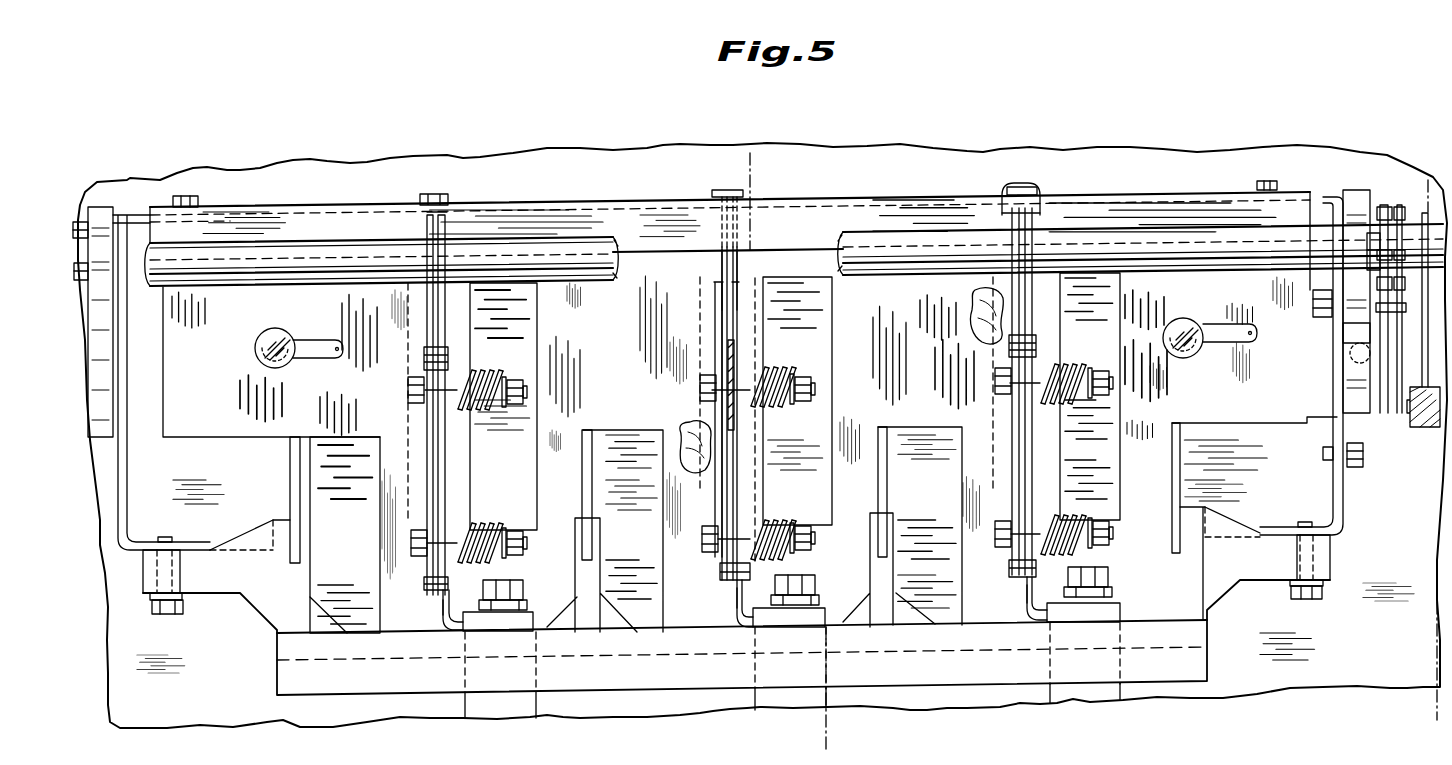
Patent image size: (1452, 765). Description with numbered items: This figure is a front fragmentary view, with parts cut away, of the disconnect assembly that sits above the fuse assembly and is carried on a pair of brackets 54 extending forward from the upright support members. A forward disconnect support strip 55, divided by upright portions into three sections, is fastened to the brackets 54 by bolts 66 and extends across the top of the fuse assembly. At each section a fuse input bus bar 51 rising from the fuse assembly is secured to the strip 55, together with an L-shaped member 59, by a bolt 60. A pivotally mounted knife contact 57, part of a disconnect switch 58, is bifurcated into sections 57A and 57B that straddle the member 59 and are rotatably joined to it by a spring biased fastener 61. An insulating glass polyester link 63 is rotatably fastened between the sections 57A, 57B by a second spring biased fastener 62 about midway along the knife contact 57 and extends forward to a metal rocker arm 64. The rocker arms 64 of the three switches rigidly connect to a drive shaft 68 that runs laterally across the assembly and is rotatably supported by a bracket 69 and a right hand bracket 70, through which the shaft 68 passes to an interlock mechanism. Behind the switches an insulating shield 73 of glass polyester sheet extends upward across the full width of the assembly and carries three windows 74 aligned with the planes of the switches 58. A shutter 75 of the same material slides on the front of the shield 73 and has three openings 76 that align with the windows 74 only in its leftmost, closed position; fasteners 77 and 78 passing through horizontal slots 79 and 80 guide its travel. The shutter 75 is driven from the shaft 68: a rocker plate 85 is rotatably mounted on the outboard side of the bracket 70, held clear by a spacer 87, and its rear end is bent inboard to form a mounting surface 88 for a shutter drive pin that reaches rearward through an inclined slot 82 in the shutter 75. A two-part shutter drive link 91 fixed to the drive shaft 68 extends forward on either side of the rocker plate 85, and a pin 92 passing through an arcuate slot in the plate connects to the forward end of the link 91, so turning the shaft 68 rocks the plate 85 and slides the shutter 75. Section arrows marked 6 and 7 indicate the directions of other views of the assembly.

The fuse input bus bar 51 is at (537, 617).
The bracket 54 is at (137, 517).
The forward disconnect support strip 55 is at (270, 605).
The knife contact 57 is at (440, 465).
The knife contact section 57A is at (719, 262).
The knife contact section 57B is at (741, 264).
The disconnect switch 58 is at (447, 341).
The L-shaped member 59 is at (443, 611).
The bolt 60 is at (521, 581).
The spring biased fastener 61 is at (490, 520).
The second spring biased fastener 62 is at (500, 368).
The link 63 is at (424, 357).
The rocker arm 64 is at (449, 220).
The bolt 66 is at (168, 616).
The drive shaft 68 is at (522, 237).
The bracket 69 is at (100, 207).
The right hand bracket 70 is at (1350, 190).
The insulating shield 73 is at (333, 571).
The window 74 is at (689, 431).
The shutter 75 is at (591, 313).
The opening 76 is at (535, 305).
The fastener 77 is at (275, 328).
The fastener 78 is at (1184, 318).
The horizontal slot 79 is at (320, 341).
The horizontal slot 80 is at (1247, 325).
The inclined slot 82 is at (1350, 328).
The rocker plate 85 is at (1397, 412).
The spacer 87 is at (1386, 318).
The mounting surface 88 is at (1381, 402).
The shutter drive link 91 is at (1384, 206).
The pin 92 is at (1370, 236).
The section line 6- 6 is at (1428, 180).
The section line 7- 7 is at (757, 165).